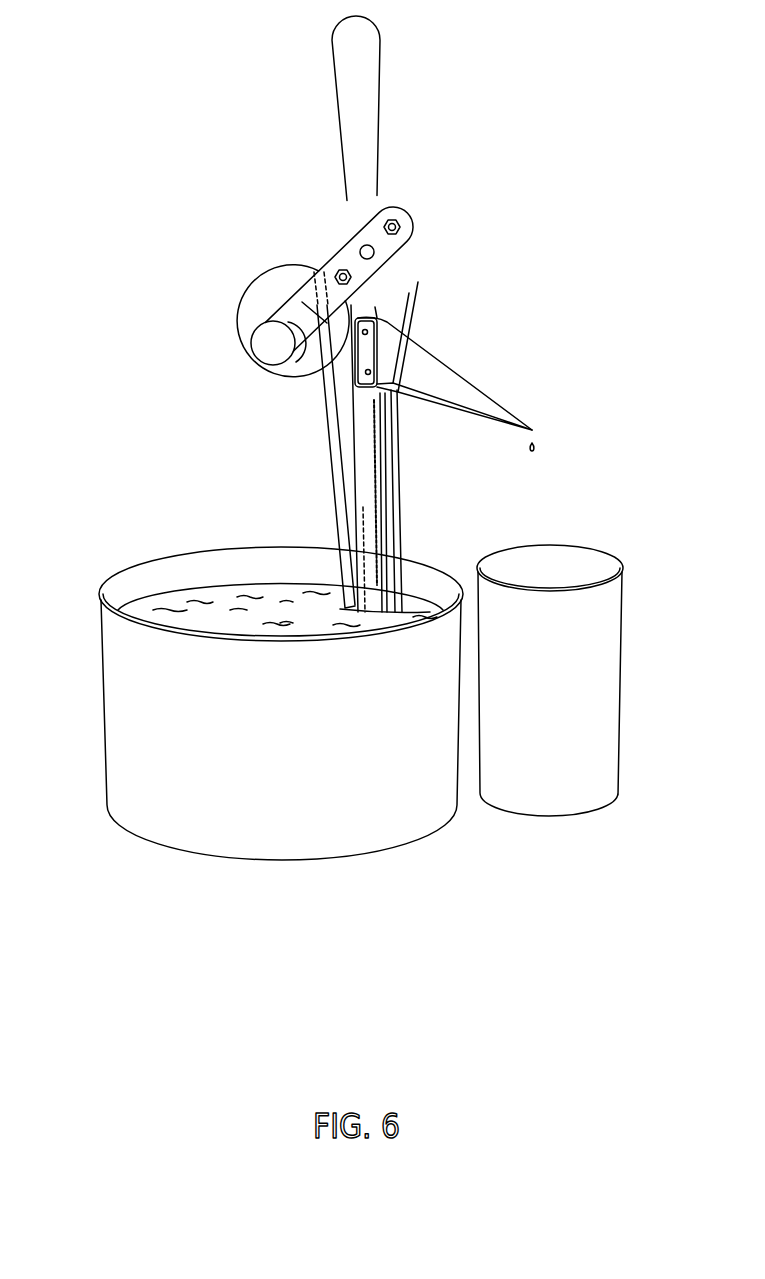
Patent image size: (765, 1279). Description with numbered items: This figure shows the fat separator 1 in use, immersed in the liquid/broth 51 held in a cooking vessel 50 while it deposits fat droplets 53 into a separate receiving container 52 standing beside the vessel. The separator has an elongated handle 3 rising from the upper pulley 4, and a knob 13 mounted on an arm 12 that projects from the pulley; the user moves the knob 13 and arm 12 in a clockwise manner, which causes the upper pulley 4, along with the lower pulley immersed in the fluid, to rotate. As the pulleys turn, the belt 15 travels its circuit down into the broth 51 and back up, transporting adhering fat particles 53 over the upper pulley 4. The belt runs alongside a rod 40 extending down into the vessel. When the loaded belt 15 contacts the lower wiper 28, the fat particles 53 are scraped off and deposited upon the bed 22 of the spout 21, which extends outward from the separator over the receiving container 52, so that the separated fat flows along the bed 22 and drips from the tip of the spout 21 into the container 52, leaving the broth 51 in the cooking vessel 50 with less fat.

The fat separator 1 is at (266, 115).
The handle 3 is at (380, 107).
The upper pulley 4 is at (389, 204).
The arm 12 is at (311, 281).
The knob 13 is at (248, 330).
The belt 15 is at (423, 289).
The spout 21 is at (430, 354).
The bed 22 is at (467, 402).
The lower wiper 28 is at (412, 398).
The rod 40 is at (368, 500).
The cooking vessel 50 is at (162, 727).
The liquid/broth 51 is at (222, 596).
The receiving container 52 is at (598, 782).
The fat droplets 53 is at (541, 442).